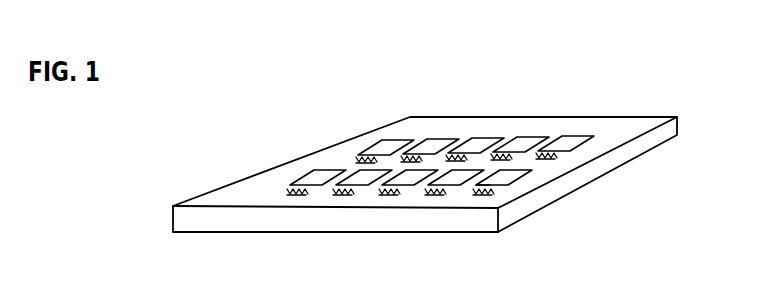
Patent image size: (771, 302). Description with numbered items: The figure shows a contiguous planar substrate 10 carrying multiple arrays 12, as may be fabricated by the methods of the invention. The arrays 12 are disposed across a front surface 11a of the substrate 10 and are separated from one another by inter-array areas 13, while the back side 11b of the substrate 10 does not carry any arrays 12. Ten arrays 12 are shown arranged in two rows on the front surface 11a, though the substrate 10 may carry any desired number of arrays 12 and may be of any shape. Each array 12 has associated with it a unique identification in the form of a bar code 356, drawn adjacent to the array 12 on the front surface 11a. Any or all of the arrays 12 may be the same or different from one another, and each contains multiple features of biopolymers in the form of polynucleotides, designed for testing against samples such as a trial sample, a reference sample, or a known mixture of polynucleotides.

The substrate 10 is at (443, 181).
The front surface 11a is at (620, 126).
The back side 11b is at (262, 237).
The array 12 is at (327, 172).
The inter-array area 13 is at (472, 186).
The bar code 356 is at (357, 156).